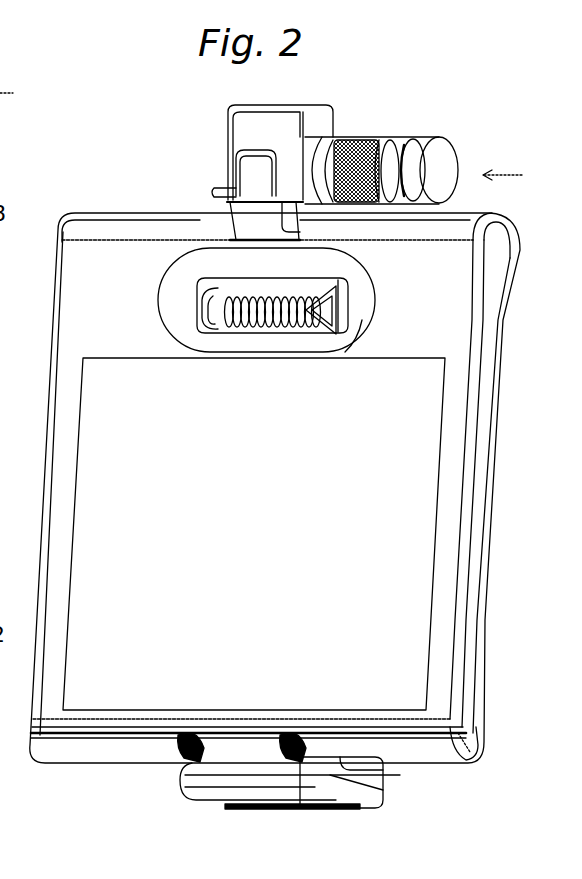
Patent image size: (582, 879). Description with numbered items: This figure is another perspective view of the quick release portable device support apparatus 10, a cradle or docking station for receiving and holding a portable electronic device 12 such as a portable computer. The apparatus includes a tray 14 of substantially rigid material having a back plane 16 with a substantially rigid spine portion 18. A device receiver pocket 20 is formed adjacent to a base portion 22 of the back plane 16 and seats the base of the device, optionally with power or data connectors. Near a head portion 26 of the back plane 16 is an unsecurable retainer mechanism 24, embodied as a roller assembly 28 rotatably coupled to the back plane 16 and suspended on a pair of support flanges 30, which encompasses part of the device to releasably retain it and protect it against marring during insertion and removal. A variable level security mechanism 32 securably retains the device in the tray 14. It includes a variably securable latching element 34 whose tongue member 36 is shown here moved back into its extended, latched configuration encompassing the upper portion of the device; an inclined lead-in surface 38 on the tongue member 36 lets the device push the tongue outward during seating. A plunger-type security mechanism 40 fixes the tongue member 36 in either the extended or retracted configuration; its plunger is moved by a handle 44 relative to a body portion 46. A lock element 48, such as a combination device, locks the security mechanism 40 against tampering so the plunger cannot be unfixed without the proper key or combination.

The quick release portable device support apparatus 10 is at (469, 124).
The portable electronic device 12 is at (68, 227).
The tray 14 is at (98, 755).
The back plane 16 is at (480, 698).
The spine portion 18 is at (350, 306).
The device receiver pocket 20 is at (245, 745).
The base portion 22 is at (470, 718).
The unsecurable retainer mechanism 24 is at (208, 306).
The head portion 26 is at (296, 296).
The roller assembly 28 is at (288, 327).
The support flanges 30 is at (257, 305).
The variable level security mechanism 32 is at (275, 134).
The latching element 34 is at (248, 168).
The tongue member 36 is at (231, 188).
The lead-in surface 38 is at (255, 229).
The plunger-type security mechanism 40 is at (403, 150).
The handle 44 is at (438, 175).
The body portion 46 is at (395, 147).
The lock element 48 is at (362, 148).